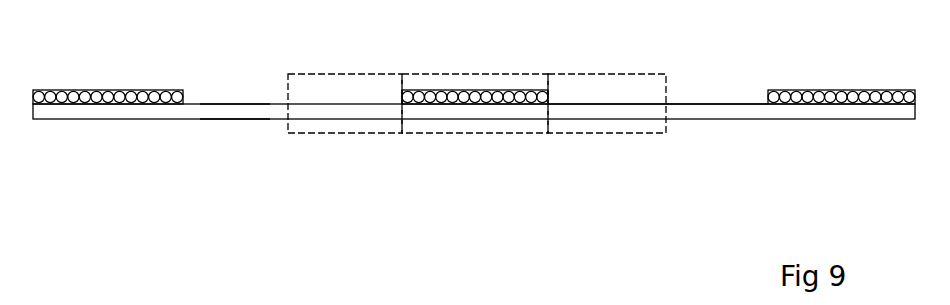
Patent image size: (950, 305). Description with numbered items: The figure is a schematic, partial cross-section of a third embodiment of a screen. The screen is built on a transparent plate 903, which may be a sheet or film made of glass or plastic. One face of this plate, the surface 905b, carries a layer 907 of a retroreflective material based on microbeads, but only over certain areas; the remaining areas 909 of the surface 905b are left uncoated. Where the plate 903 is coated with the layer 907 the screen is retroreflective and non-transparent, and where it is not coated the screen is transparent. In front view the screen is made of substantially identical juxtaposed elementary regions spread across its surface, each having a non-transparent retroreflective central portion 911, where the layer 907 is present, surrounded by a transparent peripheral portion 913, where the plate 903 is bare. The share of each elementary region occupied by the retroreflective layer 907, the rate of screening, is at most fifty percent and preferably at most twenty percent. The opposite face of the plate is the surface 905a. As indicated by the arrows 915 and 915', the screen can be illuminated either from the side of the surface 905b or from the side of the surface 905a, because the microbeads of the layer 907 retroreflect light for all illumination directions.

The transparent plate 903 is at (873, 120).
The surface 905a is at (232, 128).
The surface 905b is at (234, 95).
The layer of retroreflective material 907 is at (128, 98).
The areas not coated with the layer 909 is at (713, 102).
The retroreflective central portion 911 is at (426, 134).
The transparent peripheral portion 913 is at (343, 134).
The arrow 915 is at (505, 178).
The arrow 915' is at (509, 30).